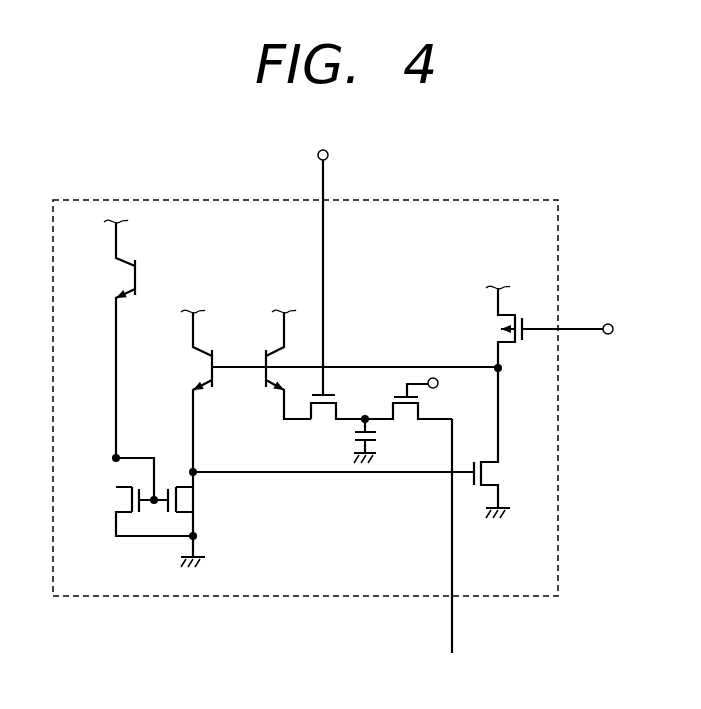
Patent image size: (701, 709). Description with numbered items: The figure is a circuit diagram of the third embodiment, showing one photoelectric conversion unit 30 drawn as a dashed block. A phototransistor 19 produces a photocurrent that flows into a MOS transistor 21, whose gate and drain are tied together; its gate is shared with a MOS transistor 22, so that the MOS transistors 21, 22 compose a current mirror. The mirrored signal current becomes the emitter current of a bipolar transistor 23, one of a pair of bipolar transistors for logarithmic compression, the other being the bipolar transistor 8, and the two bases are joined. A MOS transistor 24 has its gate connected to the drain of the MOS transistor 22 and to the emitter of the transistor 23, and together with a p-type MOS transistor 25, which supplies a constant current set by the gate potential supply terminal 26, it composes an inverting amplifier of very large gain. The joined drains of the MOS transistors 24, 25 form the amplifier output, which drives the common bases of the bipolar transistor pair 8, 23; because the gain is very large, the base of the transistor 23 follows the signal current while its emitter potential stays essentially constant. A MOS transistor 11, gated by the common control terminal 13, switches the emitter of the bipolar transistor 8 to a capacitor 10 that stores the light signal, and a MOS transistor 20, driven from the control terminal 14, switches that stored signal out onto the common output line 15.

The bipolar transistor 8 is at (264, 353).
The capacitor 10 is at (368, 416).
The MOS transistor 11 is at (325, 420).
The control terminal 13 is at (328, 152).
The control terminal 14 is at (435, 368).
The common output line 15 is at (455, 628).
The phototransistor 19 is at (122, 275).
The MOS transistor 20 is at (407, 420).
The MOS transistor 21 is at (118, 500).
The MOS transistor 22 is at (194, 500).
The bipolar transistor 23 is at (199, 365).
The MOS transistor 24 is at (500, 470).
The p-type MOS transistor 25 is at (503, 315).
The gate potential supply terminal 26 is at (608, 323).
The photoelectric conversion unit 30 is at (512, 200).